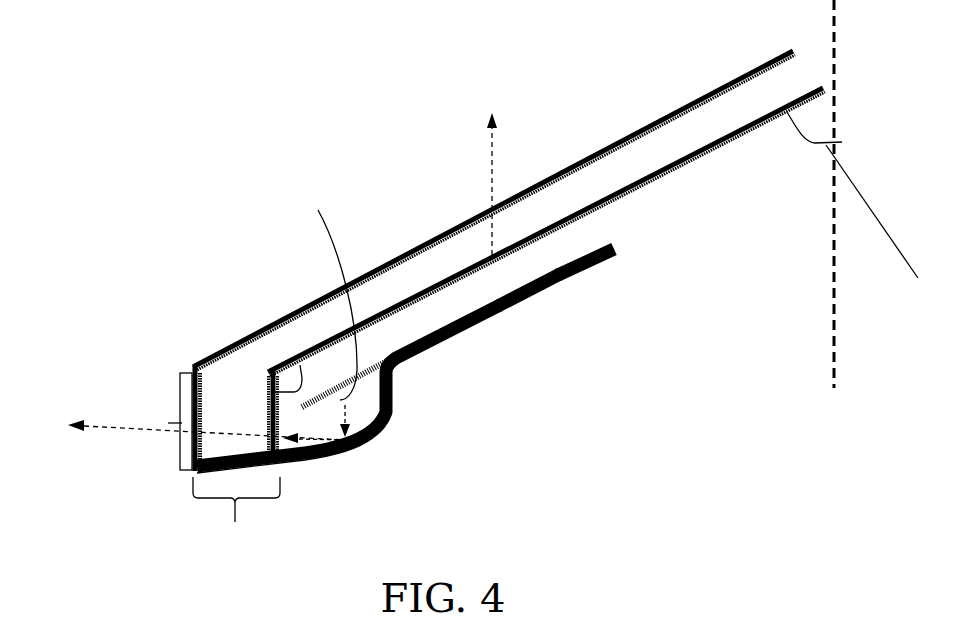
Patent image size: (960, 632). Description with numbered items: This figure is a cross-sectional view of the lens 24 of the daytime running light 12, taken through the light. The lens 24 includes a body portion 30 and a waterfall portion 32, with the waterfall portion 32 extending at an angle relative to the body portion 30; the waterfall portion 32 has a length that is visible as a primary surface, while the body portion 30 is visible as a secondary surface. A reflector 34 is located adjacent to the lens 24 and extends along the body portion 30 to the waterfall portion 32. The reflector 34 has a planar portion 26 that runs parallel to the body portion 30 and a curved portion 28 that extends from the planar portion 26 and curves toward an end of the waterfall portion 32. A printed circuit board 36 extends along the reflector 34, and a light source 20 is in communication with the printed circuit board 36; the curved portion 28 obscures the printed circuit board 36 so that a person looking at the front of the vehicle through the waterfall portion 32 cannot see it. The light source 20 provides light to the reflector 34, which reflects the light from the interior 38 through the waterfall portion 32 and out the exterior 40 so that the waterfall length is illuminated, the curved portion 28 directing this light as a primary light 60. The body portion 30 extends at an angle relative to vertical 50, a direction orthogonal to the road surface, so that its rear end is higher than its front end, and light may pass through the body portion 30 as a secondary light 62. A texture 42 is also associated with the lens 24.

The daytime running light 12 is at (399, 167).
The light source 20 is at (390, 420).
The lens 24 is at (272, 319).
The planar portion 26 is at (535, 298).
The curved portion 28 is at (358, 455).
The body portion 30 is at (707, 157).
The waterfall portion 32 is at (240, 435).
The reflector 34 is at (618, 258).
The printed circuit board 36 is at (437, 348).
The interior 38 is at (283, 438).
The exterior 40 is at (118, 377).
The texture 42 is at (268, 437).
The vertical 50 is at (800, 0).
The primary light 60 is at (100, 428).
The secondary light 62 is at (490, 172).